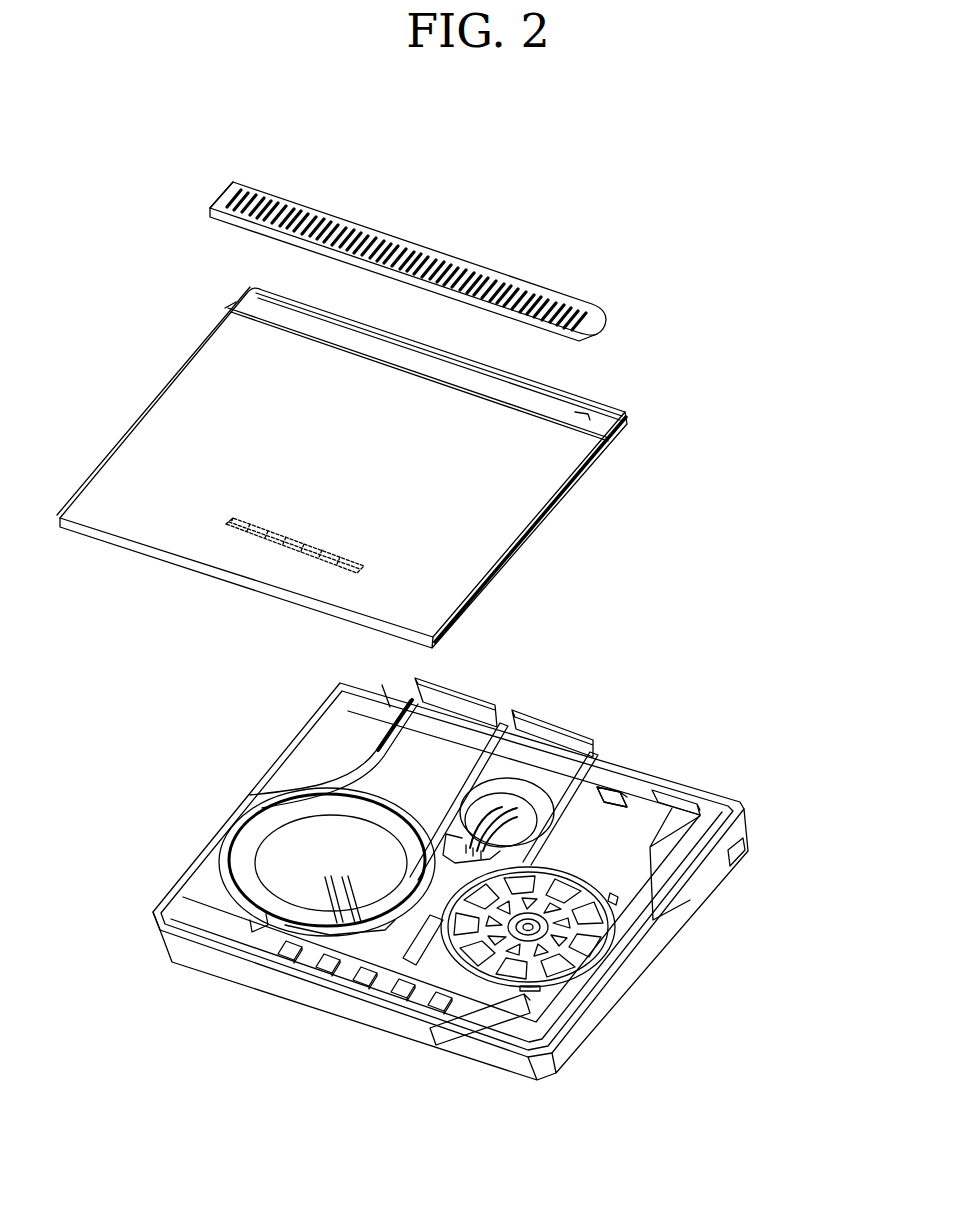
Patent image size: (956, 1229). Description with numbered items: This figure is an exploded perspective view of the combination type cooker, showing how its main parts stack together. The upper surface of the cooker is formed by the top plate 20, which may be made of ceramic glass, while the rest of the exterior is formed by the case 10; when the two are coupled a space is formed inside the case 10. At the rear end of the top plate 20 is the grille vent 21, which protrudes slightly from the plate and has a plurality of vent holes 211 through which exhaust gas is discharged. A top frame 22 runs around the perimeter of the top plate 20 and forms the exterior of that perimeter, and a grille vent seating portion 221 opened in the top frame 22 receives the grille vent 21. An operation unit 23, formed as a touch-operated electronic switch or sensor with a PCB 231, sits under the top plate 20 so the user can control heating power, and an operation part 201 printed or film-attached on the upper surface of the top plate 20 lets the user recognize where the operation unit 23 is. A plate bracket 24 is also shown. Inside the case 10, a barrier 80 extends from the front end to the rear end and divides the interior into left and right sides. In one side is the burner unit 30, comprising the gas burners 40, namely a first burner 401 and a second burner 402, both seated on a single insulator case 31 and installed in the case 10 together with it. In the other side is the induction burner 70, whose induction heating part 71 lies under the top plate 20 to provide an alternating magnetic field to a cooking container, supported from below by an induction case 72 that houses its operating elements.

The case 10 is at (768, 784).
The top plate 20 is at (160, 427).
The operation part 201 is at (240, 537).
The grille vent 21 is at (388, 230).
The vent holes 211 is at (363, 230).
The top frame 22 is at (552, 512).
The grille vent seating portion 221 is at (592, 418).
The operation unit 23 is at (357, 998).
The PCB 231 is at (385, 995).
The plate bracket 24 is at (337, 713).
The burner unit 30 is at (212, 872).
The insulator case 31 is at (237, 857).
The gas burners 40 is at (162, 754).
The first burner 401 is at (272, 848).
The second burner 402 is at (470, 807).
The induction burner 70 is at (697, 1007).
The induction heating part 71 is at (602, 962).
The induction case 72 is at (640, 929).
The barrier 80 is at (616, 777).